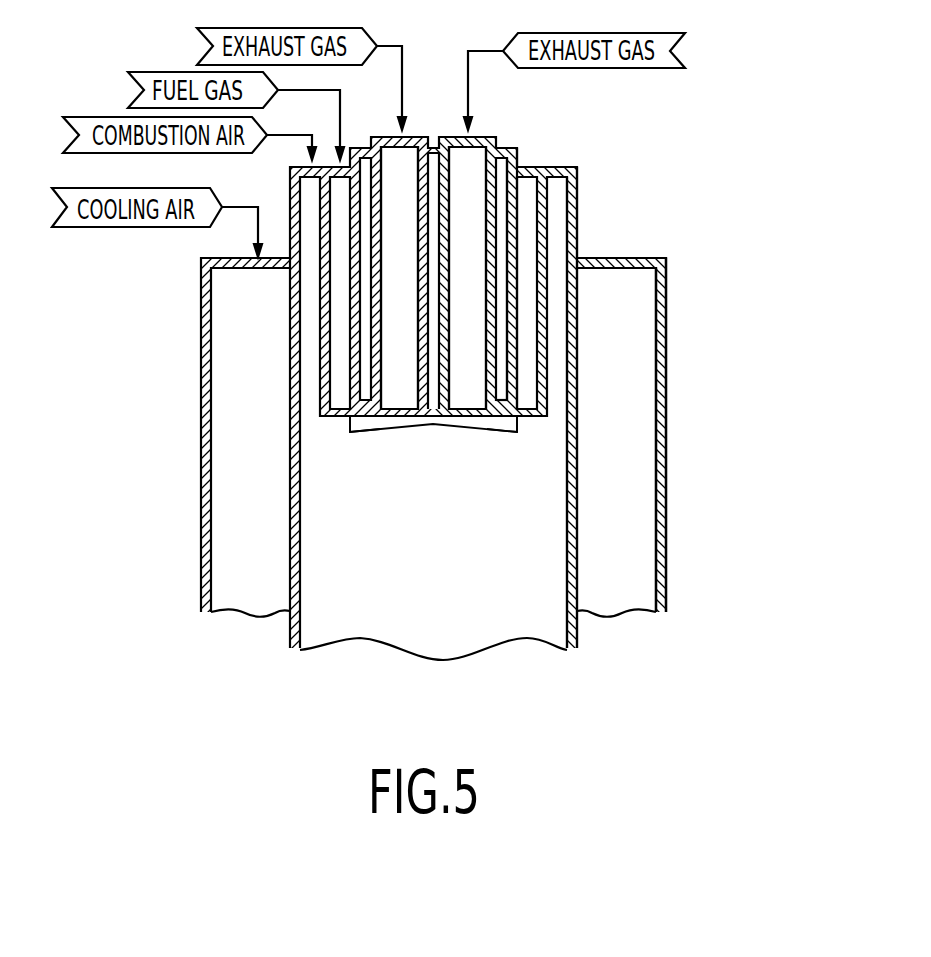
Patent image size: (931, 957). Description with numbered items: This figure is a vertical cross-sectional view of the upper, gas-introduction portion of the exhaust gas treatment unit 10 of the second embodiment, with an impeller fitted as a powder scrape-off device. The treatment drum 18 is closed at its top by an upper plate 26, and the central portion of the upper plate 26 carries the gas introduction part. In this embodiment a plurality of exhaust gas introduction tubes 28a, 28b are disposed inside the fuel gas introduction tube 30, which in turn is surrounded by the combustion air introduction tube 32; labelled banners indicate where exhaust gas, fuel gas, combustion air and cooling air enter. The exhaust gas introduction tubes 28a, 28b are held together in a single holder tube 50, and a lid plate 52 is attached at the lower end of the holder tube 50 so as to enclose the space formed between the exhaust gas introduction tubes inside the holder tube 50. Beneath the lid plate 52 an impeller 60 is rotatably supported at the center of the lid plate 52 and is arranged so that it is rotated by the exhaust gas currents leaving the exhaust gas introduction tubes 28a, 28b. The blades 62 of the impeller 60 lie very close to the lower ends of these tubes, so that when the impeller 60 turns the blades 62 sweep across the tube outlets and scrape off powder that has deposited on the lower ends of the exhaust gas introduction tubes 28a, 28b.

The exhaust gas treatment unit 10 is at (747, 311).
The treatment drum 18 is at (667, 293).
The upper plate 26 is at (641, 257).
The exhaust gas introduction tube 28a is at (423, 136).
The exhaust gas introduction tube 28b is at (516, 147).
The fuel gas introduction tube 30 is at (578, 210).
The combustion air introduction tube 32 is at (578, 240).
The holder tube 50 is at (523, 185).
The lid plate 52 is at (502, 399).
The impeller 60 is at (447, 430).
The blades 62 is at (517, 483).